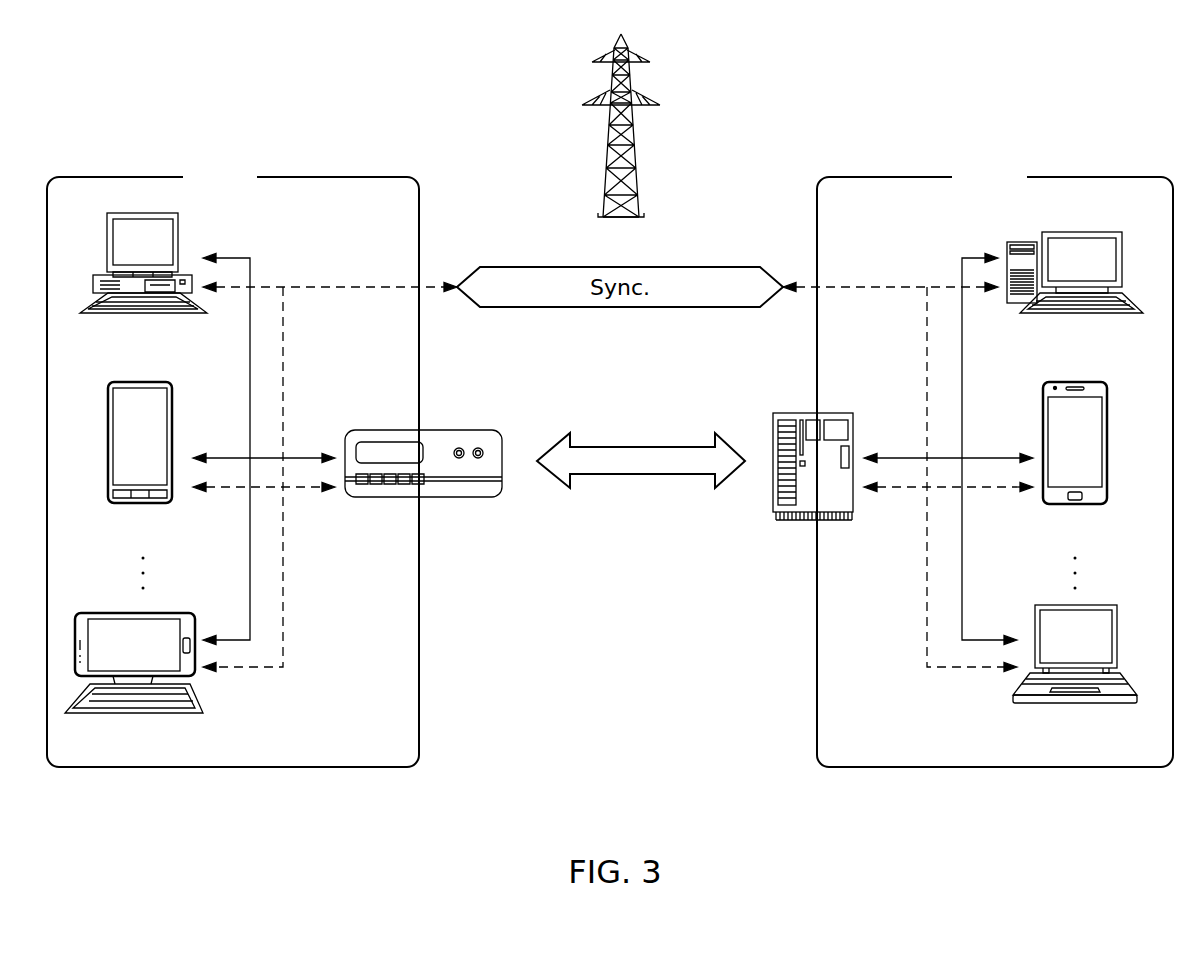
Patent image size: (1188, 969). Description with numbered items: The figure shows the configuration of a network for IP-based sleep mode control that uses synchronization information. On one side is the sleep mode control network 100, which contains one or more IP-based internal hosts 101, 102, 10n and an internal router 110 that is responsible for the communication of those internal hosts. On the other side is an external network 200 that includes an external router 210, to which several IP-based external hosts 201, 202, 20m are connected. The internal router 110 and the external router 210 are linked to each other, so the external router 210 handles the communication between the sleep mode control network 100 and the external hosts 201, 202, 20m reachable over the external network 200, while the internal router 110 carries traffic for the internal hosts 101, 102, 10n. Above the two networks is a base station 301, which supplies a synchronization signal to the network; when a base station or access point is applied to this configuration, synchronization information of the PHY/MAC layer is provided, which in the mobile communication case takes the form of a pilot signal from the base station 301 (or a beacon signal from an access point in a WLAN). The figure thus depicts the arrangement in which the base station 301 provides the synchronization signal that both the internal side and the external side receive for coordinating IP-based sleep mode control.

The sleep mode control network 100 is at (198, 188).
The external network 200 is at (966, 188).
The IP-based internal host 101 is at (143, 285).
The IP-based internal host 102 is at (140, 459).
The IP-based internal host 10n is at (134, 681).
The internal router 110 is at (423, 484).
The IP-based external host 201 is at (1075, 295).
The IP-based external host 202 is at (1075, 460).
The IP-based external host 20m is at (1075, 677).
The external router 210 is at (813, 485).
The base station 301 is at (621, 143).